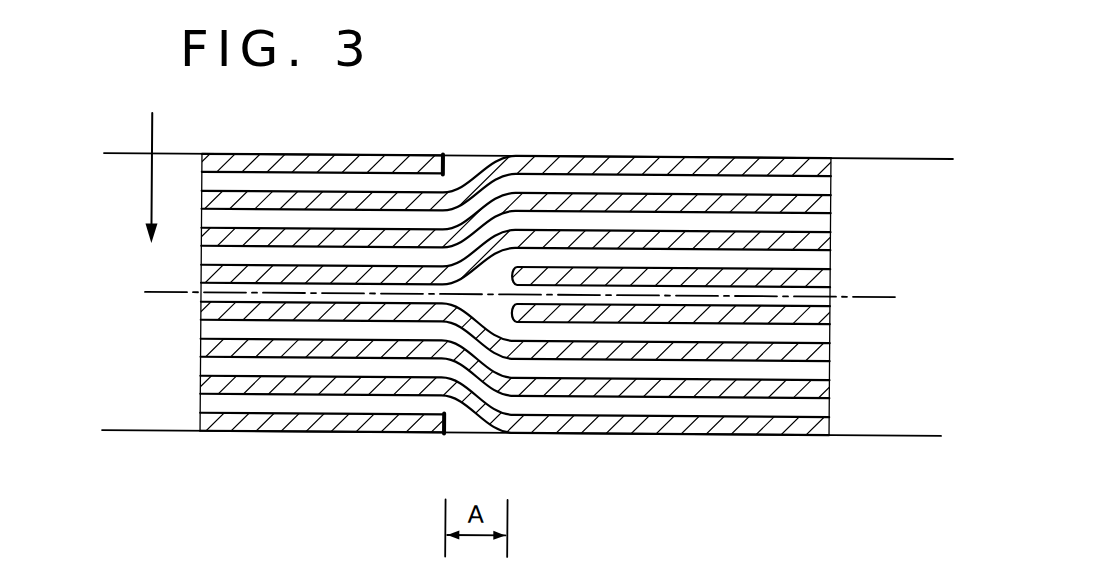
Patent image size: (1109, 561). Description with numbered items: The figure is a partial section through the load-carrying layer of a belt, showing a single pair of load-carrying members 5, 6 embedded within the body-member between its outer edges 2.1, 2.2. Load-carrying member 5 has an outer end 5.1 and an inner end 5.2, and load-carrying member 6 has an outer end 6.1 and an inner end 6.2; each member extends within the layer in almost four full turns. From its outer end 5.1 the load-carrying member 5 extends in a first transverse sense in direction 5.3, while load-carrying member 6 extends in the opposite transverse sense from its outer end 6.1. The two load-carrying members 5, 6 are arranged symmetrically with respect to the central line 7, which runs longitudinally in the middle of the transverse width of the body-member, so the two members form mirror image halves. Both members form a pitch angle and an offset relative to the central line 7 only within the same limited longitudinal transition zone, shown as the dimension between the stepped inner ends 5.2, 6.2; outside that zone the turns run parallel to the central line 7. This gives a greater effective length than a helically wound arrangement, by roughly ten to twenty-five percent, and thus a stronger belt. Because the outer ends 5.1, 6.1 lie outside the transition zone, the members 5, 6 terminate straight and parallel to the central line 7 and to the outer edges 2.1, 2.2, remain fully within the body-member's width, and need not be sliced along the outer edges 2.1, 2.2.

The outer edge 2.1 is at (693, 156).
The outer edge 2.2 is at (758, 433).
The load-carrying member 5 is at (286, 162).
The outer end 5.1 is at (445, 159).
The inner end 5.2 is at (512, 269).
The direction 5.3 is at (151, 201).
The load-carrying member 6 is at (268, 422).
The outer end 6.1 is at (450, 431).
The inner end 6.2 is at (512, 310).
The central line 7 is at (855, 295).